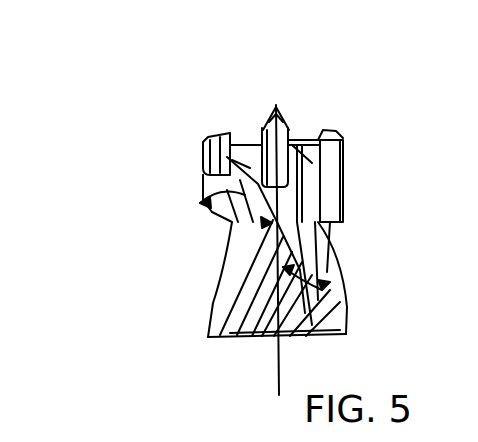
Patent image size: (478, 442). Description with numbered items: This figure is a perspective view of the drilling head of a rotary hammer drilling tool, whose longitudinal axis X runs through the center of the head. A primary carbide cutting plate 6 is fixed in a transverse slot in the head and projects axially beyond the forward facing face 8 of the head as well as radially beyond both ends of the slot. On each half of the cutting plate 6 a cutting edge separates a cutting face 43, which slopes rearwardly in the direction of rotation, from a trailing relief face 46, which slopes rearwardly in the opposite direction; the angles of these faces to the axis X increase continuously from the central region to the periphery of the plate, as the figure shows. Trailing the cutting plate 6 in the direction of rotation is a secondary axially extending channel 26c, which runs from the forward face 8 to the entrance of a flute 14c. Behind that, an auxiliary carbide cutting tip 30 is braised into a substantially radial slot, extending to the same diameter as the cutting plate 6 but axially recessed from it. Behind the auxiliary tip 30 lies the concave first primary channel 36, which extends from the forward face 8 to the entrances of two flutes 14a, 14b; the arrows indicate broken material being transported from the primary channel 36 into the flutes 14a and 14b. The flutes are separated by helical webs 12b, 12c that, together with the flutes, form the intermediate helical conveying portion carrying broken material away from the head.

The carbide cutting plate 6 is at (276, 105).
The forward facing face 8 is at (291, 133).
The helical web 12b is at (285, 340).
The helical web 12c is at (236, 272).
The helical flute 14a is at (305, 327).
The helical flute 14b is at (265, 298).
The helical flute 14c is at (222, 243).
The secondary axially extending channel 26c is at (242, 150).
The auxiliary cutting tip 30 is at (205, 137).
The first primary channel 36 is at (280, 203).
The cutting face 43 is at (304, 133).
The relief face 46 is at (244, 150).
The longitudinal axis X is at (277, 415).